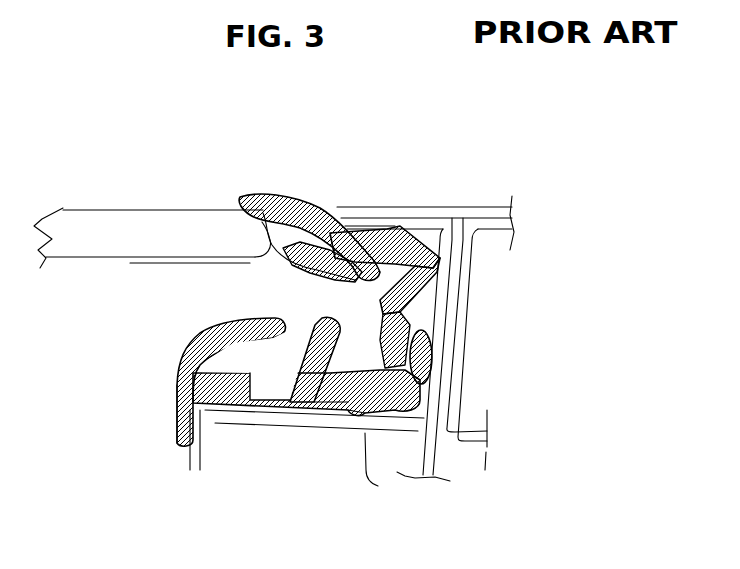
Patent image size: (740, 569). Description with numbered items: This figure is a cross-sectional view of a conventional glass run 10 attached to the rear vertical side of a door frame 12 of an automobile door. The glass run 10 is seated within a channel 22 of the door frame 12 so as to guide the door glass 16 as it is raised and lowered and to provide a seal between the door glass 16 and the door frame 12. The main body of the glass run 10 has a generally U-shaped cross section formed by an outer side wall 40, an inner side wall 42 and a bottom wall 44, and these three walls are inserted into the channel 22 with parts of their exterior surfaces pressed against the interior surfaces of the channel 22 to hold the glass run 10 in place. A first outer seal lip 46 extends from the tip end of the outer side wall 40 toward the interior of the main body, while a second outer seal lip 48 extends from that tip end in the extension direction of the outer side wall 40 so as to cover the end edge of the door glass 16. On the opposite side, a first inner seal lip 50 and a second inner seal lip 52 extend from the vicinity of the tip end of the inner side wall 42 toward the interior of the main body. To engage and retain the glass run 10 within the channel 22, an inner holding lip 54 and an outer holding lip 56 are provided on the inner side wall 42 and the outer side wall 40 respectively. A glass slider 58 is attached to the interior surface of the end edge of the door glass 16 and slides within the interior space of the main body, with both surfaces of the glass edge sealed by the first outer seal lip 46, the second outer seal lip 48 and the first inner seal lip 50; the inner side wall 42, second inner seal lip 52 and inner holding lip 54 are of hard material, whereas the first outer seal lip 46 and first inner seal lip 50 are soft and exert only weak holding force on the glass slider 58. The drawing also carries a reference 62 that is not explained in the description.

The glass run 10 is at (177, 407).
The door frame 12 is at (468, 204).
The door glass 16 is at (143, 208).
The channel 22 is at (365, 432).
The outer side wall 40 is at (350, 252).
The inner side wall 42 is at (278, 405).
The bottom wall 44 is at (355, 315).
The first outer seal lip 46 is at (362, 270).
The second outer seal lip 48 is at (272, 196).
The first inner seal lip 50 is at (200, 340).
The second inner seal lip 52 is at (322, 332).
The inner holding lip 54 is at (318, 385).
The outer holding lip 56 is at (398, 232).
The glass slider 58 is at (121, 259).
The lower seal surface 62 is at (362, 420).